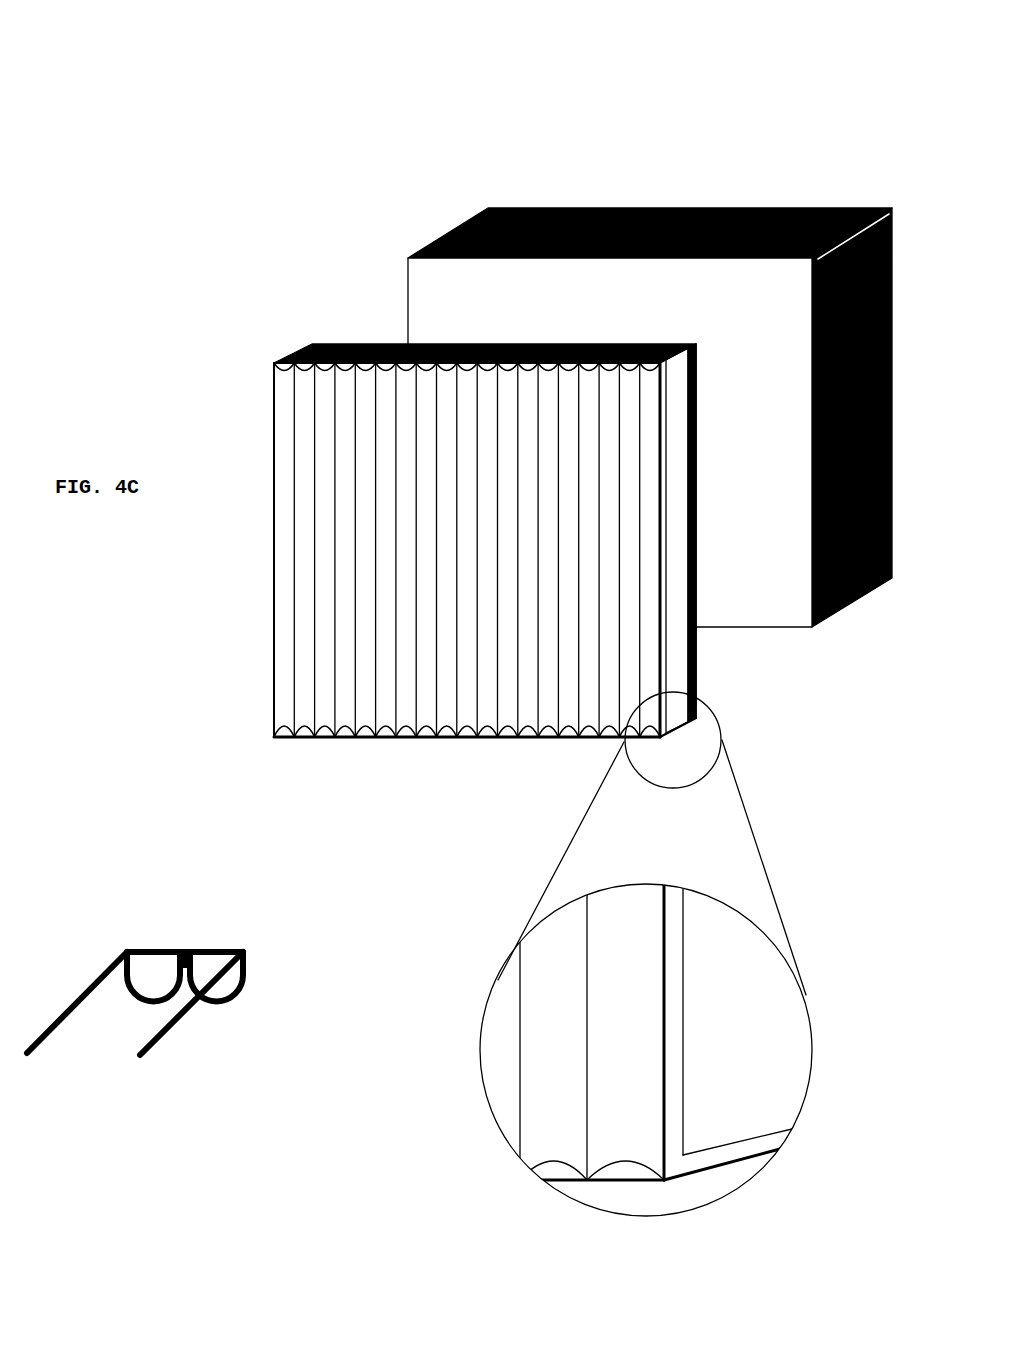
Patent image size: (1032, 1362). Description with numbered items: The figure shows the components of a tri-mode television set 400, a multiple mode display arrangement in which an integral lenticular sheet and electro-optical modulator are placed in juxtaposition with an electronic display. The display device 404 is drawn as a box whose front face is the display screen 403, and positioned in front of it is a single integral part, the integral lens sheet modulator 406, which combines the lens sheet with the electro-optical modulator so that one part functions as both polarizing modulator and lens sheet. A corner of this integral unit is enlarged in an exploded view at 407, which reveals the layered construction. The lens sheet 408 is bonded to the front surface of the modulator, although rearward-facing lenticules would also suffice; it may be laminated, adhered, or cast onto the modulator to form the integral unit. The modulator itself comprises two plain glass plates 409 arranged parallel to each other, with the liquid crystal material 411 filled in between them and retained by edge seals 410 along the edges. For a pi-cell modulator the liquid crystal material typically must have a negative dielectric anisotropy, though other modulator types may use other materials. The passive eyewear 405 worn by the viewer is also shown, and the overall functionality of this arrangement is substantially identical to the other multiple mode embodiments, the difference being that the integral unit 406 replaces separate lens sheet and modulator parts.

The tri-mode television set 400 is at (745, 120).
The display screen 403 is at (733, 550).
The display device 404 is at (529, 193).
The passive eyewear 405 is at (197, 1020).
The integral lens sheet modulator 406 is at (350, 318).
The corner section exploded view 407 is at (467, 1087).
The lens sheet 408 is at (550, 1025).
The glass plates 409 is at (795, 1077).
The edge seals 410 is at (682, 1188).
The liquid crystal material 411 is at (767, 1143).